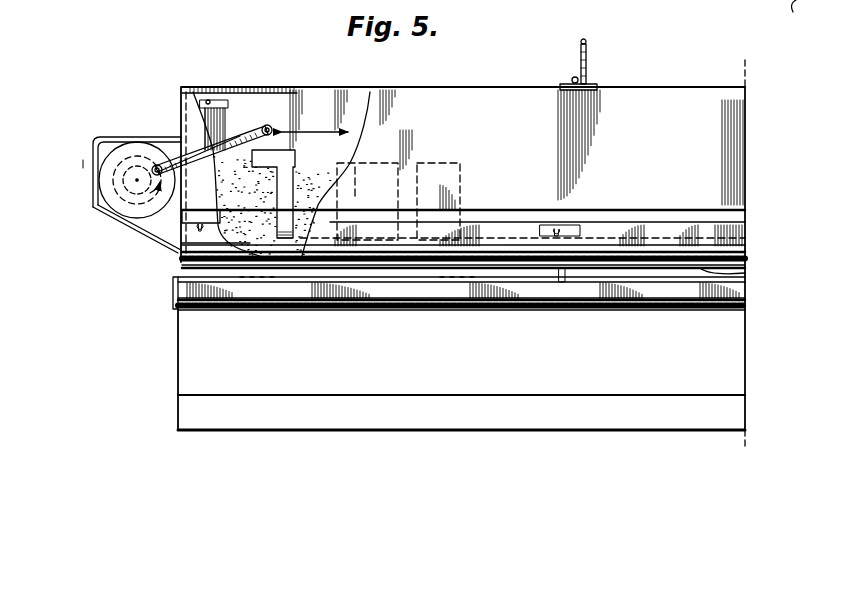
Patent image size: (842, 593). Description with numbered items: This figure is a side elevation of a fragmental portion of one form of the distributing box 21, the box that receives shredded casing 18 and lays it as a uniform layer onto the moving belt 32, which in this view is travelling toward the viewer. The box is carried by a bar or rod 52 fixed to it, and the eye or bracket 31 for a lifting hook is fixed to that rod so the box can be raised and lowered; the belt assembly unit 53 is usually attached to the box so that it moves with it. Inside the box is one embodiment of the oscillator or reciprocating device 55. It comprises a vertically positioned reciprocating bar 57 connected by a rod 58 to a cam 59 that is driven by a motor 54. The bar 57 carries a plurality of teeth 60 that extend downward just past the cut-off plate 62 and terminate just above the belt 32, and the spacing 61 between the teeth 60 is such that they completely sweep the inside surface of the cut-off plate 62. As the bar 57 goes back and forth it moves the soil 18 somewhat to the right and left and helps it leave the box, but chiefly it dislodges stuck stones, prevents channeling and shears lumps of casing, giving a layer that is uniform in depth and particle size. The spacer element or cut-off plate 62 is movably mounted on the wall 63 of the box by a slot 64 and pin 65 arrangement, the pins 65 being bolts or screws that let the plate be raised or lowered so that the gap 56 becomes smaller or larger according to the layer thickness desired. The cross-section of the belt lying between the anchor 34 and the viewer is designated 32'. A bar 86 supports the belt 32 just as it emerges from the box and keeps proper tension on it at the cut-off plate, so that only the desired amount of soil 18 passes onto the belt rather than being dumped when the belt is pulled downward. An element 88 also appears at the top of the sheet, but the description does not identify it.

The casing 18 is at (260, 87).
The distributing box 21 is at (750, 112).
The eye or bracket 31 is at (587, 58).
The belt 32 is at (500, 258).
The belt cross-section 32' is at (461, 324).
The anchor 34 is at (340, 290).
The bar or rod 52 is at (572, 79).
The belt assembly unit 53 is at (176, 368).
The motor 54 is at (92, 206).
The oscillator or reciprocating device 55 is at (116, 226).
The gap 56 is at (743, 252).
The reciprocating bar 57 is at (255, 173).
The rod 58 is at (210, 143).
The cam 59 is at (117, 173).
The teeth 60 is at (333, 185).
The spacing 61 is at (393, 187).
The cut-off plate 62 is at (712, 232).
The wall 63 is at (631, 118).
The slot 64 is at (572, 230).
The pin 65 is at (556, 230).
The bar 86 is at (562, 282).
The member 88 is at (813, 10).